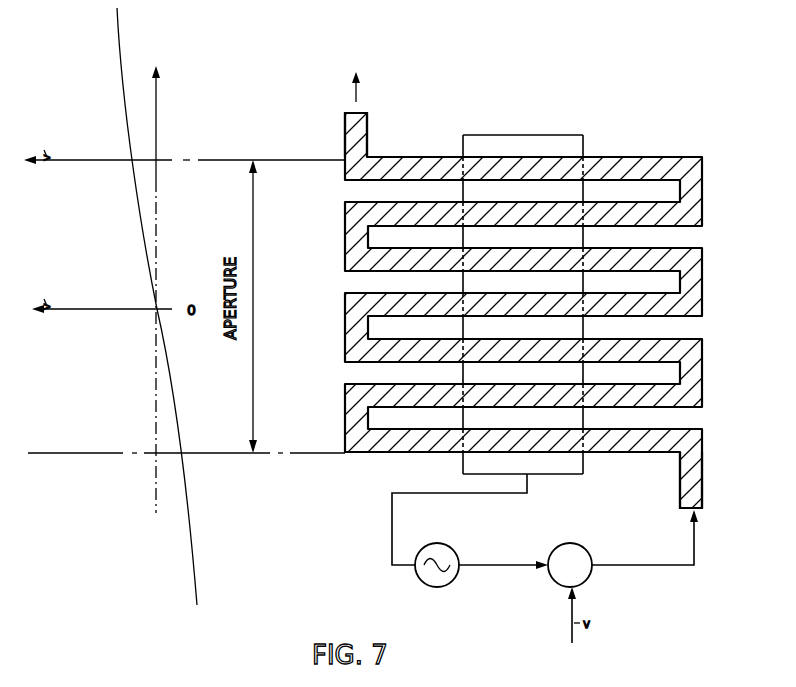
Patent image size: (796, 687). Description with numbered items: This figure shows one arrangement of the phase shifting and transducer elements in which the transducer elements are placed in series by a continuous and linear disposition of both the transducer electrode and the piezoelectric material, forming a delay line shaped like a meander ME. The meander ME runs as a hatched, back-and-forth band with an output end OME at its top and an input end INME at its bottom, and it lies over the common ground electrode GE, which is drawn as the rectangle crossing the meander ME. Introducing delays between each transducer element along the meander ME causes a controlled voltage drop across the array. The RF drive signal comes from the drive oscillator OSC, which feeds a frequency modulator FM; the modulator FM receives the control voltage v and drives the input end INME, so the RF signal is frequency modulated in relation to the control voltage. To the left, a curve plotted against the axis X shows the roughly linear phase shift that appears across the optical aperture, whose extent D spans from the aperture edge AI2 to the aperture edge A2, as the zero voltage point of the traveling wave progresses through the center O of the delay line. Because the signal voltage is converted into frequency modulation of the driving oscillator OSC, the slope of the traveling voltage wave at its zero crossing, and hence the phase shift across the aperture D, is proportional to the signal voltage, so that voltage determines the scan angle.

The meander ME is at (703, 370).
The output meander electrode terminal OME is at (367, 124).
The input meander electrode terminal INME is at (703, 486).
The ground electrode GE is at (557, 138).
The drive oscillator OSC is at (455, 551).
The frequency modulator FM is at (588, 550).
The aperture dimension D is at (253, 298).
The X axis X is at (156, 110).
The aperture edge A2 is at (186, 468).
The aperture edge AI2 is at (184, 151).